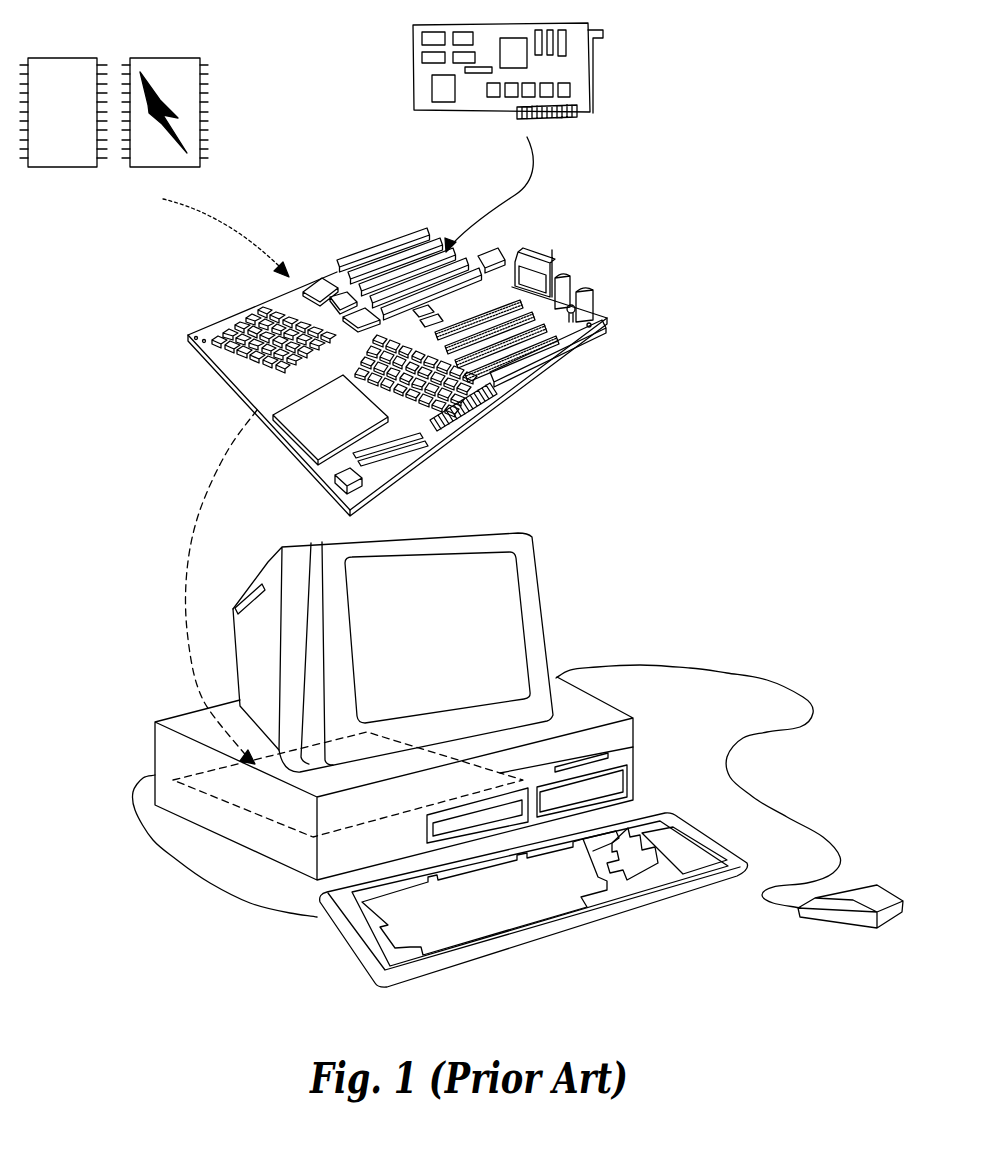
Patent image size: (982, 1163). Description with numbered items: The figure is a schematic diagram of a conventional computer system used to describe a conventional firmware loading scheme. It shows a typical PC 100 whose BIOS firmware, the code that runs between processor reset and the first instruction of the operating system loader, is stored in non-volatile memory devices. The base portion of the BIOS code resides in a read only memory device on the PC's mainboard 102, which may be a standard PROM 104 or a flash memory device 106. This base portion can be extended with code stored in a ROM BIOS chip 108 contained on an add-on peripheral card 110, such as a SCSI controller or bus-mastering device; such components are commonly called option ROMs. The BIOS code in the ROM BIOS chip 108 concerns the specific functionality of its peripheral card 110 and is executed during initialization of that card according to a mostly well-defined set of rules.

The PC 100 is at (540, 950).
The mainboard 102 is at (485, 397).
The PROM 104 is at (62, 158).
The flash memory device 106 is at (170, 158).
The ROM BIOS chip 108 is at (443, 97).
The add-on peripheral card 110 is at (479, 102).